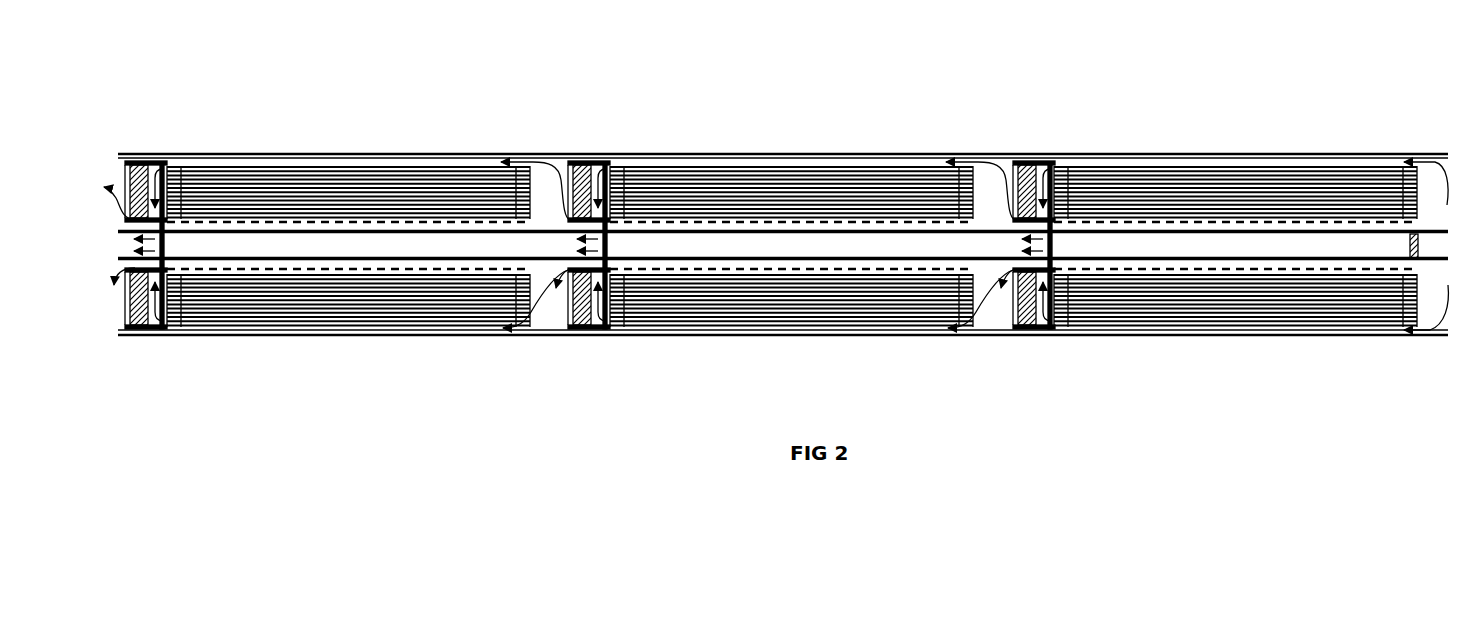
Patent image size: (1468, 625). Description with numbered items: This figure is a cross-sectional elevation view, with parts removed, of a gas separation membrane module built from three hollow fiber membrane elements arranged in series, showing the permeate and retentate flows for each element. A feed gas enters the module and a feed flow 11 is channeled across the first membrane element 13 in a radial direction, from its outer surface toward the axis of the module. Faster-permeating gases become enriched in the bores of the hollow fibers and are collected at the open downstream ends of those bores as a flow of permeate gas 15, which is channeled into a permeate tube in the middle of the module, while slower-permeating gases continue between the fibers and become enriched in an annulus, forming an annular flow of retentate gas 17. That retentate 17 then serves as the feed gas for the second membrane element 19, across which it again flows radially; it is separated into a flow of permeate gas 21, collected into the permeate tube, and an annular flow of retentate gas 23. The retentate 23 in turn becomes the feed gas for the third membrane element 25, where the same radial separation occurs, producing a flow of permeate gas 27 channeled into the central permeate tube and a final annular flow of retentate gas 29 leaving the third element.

The feed flow to first membrane element 11 is at (1448, 195).
The first membrane element 13 is at (1292, 193).
The permeate flow from first membrane element 15 is at (1043, 240).
The retentate flow from first membrane element 17 is at (978, 166).
The second membrane element 19 is at (868, 192).
The permeate flow from second membrane element 21 is at (598, 240).
The retentate flow from second membrane element 23 is at (548, 170).
The third membrane element 25 is at (415, 190).
The permeate flow from third membrane element 27 is at (150, 238).
The retentate flow from third membrane element 29 is at (338, 224).